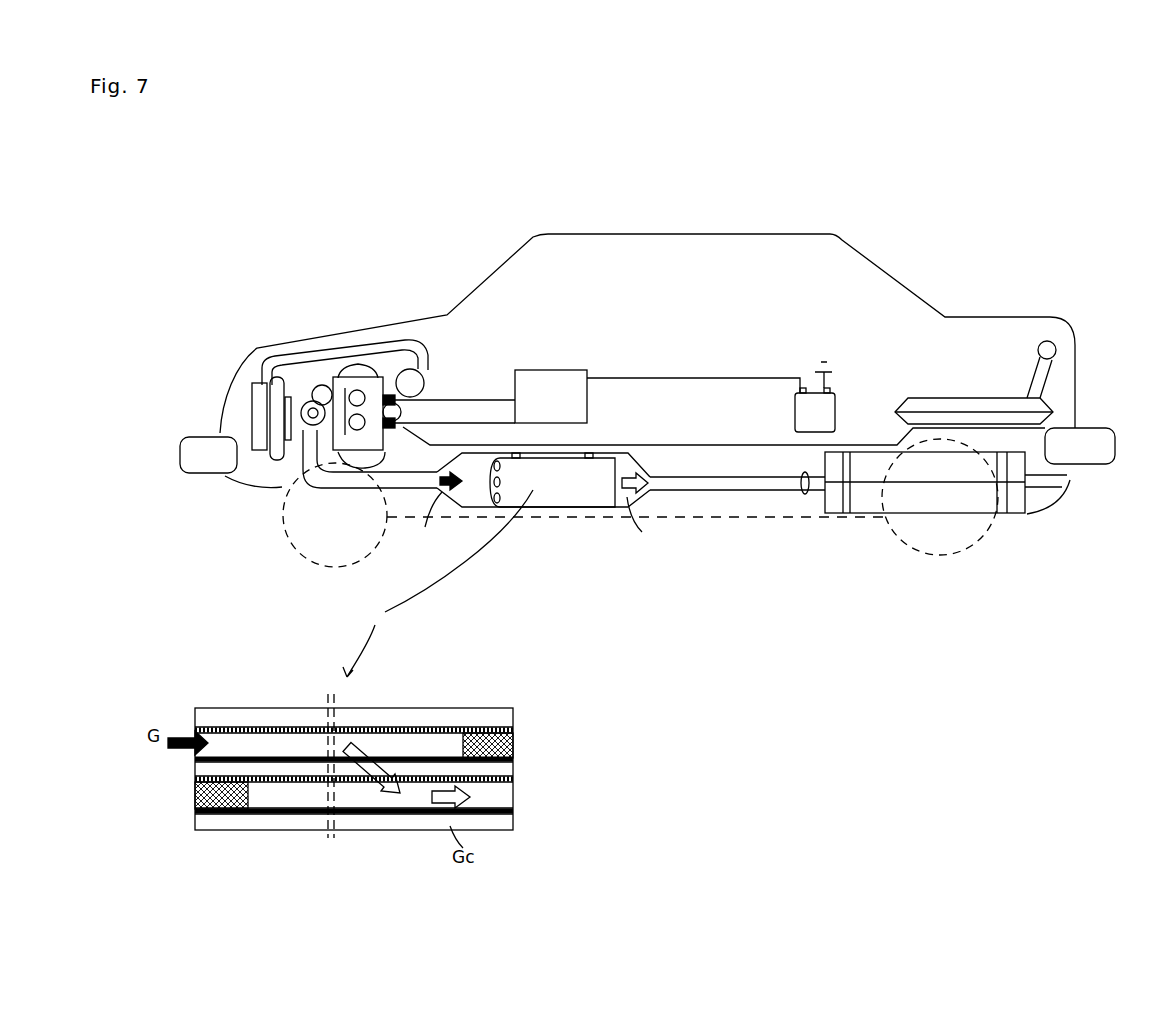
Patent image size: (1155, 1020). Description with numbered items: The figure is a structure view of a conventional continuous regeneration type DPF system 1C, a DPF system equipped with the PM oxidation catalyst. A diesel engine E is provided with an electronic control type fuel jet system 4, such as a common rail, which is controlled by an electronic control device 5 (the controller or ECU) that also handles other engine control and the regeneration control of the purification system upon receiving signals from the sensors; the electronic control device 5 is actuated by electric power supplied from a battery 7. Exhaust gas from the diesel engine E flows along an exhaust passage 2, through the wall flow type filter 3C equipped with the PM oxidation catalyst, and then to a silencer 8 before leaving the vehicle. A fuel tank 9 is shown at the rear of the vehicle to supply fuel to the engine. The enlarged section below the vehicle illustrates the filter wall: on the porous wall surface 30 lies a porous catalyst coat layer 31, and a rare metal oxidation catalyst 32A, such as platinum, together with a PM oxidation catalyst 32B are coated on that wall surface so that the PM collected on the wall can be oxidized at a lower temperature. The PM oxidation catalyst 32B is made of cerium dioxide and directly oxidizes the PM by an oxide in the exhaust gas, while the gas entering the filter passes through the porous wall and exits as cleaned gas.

The continuous regeneration type DPF system 1C is at (500, 230).
The diesel engine E is at (317, 350).
The electronic control type fuel jet system 4 is at (418, 362).
The electronic control device 5 is at (572, 383).
The battery 7 is at (810, 393).
The silencer 8 is at (873, 455).
The fuel tank 9 is at (967, 398).
The exhaust passage 2 is at (322, 487).
The wall flow type filter equipped with the PM oxidation catalyst 3C is at (597, 493).
The rare metal oxidation catalyst 32A is at (517, 783).
The PM oxidation catalyst 32B is at (510, 797).
The porous catalyst coat layer 31 is at (513, 797).
The porous wall surface 30 is at (513, 821).